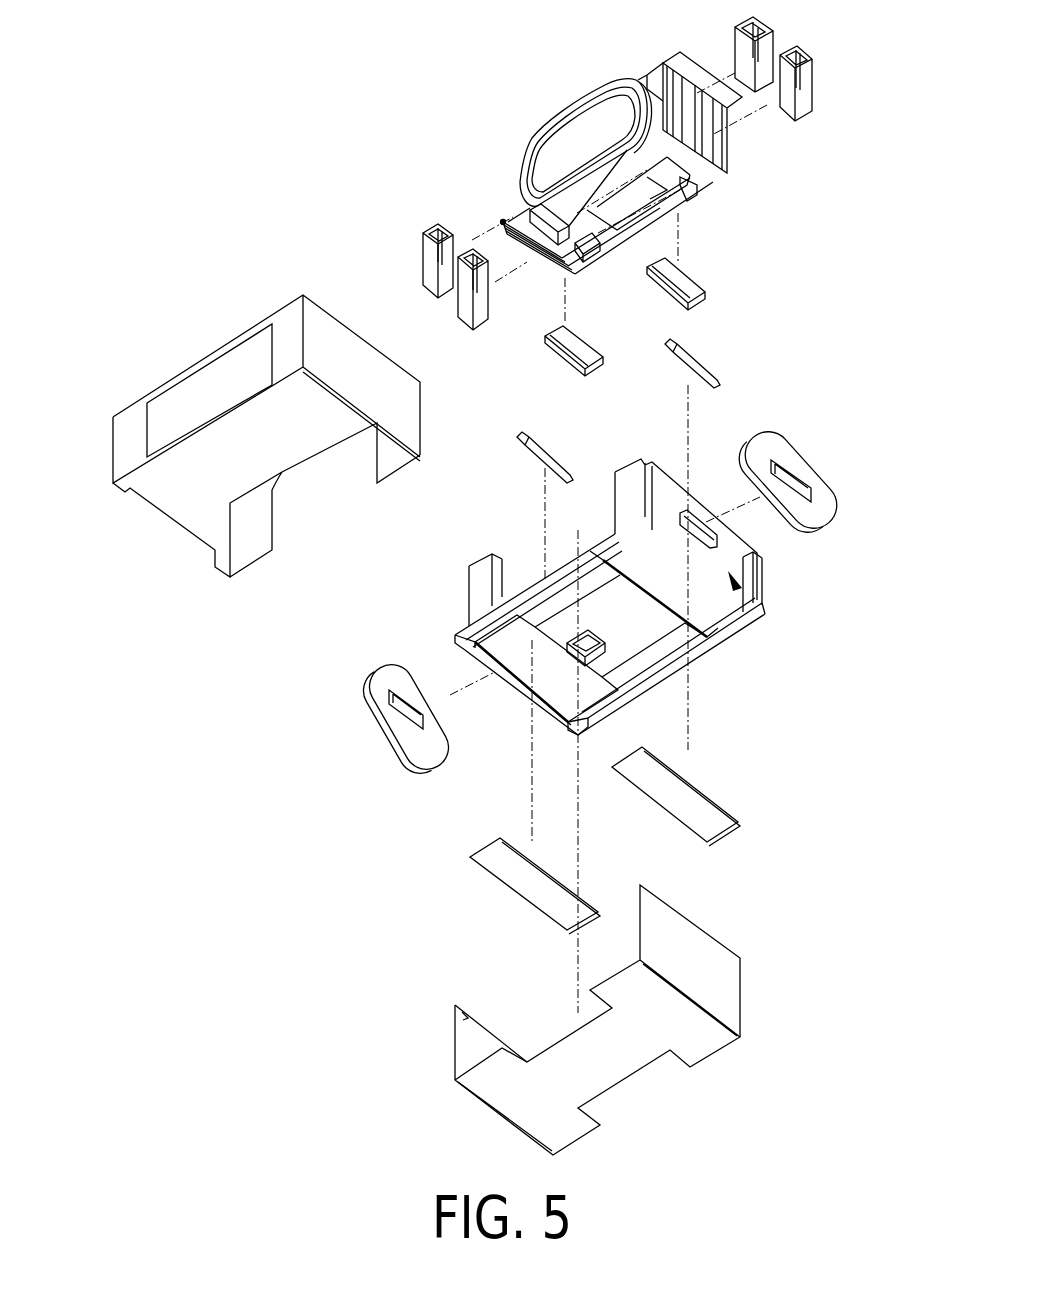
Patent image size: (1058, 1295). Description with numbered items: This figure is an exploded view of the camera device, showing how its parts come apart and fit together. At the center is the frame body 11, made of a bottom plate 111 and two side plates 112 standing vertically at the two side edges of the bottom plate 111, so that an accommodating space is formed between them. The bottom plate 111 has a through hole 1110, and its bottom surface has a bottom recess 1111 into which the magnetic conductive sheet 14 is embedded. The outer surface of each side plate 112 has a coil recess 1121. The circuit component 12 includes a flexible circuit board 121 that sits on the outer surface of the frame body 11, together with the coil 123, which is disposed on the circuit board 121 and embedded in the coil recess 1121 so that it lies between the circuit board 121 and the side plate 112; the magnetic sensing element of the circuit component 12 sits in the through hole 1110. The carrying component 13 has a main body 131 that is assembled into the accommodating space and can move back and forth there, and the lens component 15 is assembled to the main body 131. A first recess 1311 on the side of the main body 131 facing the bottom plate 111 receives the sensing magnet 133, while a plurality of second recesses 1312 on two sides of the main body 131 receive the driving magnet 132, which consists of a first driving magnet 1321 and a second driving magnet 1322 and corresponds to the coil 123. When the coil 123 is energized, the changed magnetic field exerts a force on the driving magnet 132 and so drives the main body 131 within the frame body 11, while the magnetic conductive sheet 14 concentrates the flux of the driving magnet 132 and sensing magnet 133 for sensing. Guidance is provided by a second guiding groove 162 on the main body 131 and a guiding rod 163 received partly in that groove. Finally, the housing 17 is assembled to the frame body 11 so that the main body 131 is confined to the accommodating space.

The frame body 11 is at (397, 578).
The bottom plate 111 is at (537, 612).
The through hole 1110 is at (585, 642).
The bottom recess 1111 is at (707, 610).
The side plate 112 is at (487, 585).
The coil recess 1121 is at (737, 608).
The circuit component 12 is at (426, 974).
The circuit board 121 is at (468, 1052).
The coil 123 is at (813, 527).
The carrying component 13 is at (434, 96).
The main body 131 is at (508, 177).
The first recess 1311 is at (667, 178).
The second recess 1312 is at (702, 100).
The driving magnet 132 is at (812, 166).
The first driving magnet 1321 is at (753, 92).
The second driving magnet 1322 is at (797, 123).
The sensing magnet 133 is at (677, 287).
The magnetic conductive sheet 14 is at (707, 813).
The lens component 15 is at (573, 135).
The second guiding groove 162 is at (500, 220).
The guiding rod 163 is at (692, 357).
The housing 17 is at (134, 410).